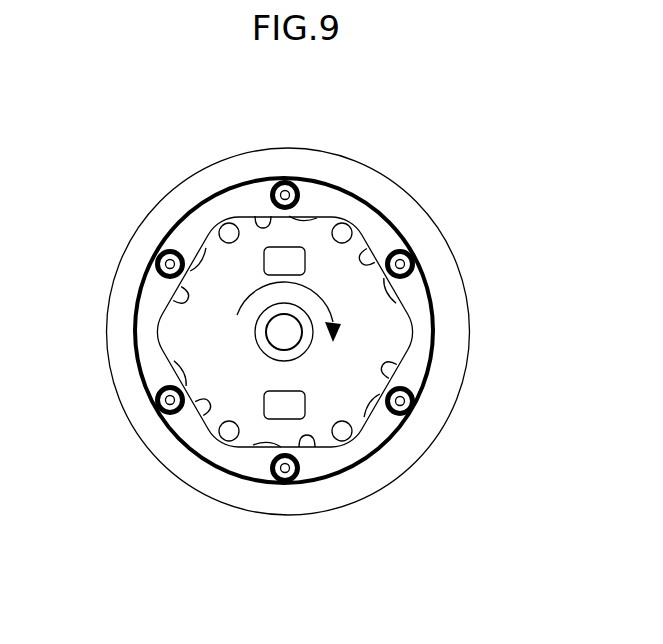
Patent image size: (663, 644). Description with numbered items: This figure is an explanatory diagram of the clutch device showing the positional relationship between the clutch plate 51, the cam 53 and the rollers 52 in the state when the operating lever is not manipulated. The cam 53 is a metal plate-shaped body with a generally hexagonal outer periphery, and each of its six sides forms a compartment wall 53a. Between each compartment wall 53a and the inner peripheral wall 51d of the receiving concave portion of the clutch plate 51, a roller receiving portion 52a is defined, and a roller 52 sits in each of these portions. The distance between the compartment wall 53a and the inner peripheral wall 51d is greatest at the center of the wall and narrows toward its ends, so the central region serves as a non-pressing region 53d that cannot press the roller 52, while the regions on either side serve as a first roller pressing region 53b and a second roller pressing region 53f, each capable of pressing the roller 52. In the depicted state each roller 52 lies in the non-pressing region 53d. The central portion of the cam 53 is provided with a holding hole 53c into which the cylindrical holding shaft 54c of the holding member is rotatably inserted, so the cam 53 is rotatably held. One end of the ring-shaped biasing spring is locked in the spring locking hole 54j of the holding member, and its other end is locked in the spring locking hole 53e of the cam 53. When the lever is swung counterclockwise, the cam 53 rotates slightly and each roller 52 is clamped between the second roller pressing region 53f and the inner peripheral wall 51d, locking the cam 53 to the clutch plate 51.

The clutch plate 51 is at (328, 140).
The inner peripheral wall 51d is at (330, 192).
The roller 52 is at (290, 182).
The roller receiving portion 52a is at (268, 188).
The cam 53 is at (377, 233).
The compartment wall 53a is at (350, 217).
The first roller pressing region 53b is at (227, 212).
The holding hole 53c is at (318, 462).
The non-pressing region 53d is at (352, 224).
The spring locking hole 53e is at (200, 240).
The second roller pressing region 53f is at (162, 245).
The holding shaft 54c is at (312, 335).
The spring locking hole 54j is at (268, 262).